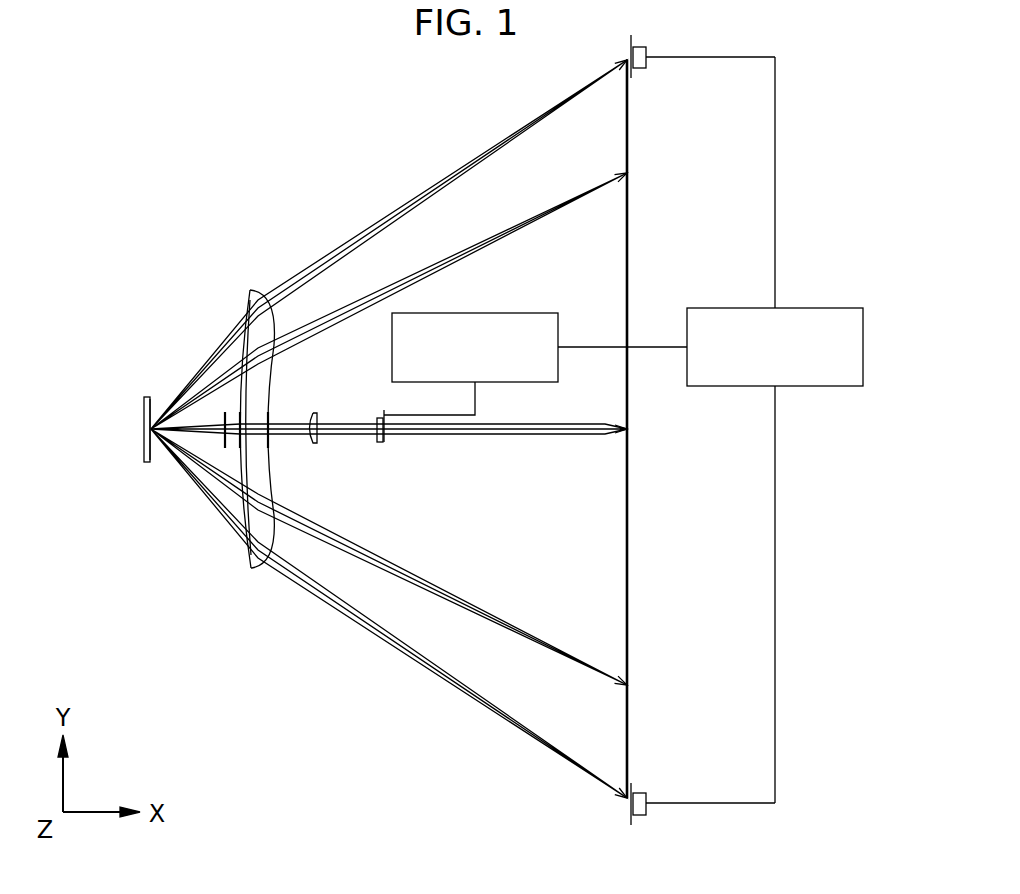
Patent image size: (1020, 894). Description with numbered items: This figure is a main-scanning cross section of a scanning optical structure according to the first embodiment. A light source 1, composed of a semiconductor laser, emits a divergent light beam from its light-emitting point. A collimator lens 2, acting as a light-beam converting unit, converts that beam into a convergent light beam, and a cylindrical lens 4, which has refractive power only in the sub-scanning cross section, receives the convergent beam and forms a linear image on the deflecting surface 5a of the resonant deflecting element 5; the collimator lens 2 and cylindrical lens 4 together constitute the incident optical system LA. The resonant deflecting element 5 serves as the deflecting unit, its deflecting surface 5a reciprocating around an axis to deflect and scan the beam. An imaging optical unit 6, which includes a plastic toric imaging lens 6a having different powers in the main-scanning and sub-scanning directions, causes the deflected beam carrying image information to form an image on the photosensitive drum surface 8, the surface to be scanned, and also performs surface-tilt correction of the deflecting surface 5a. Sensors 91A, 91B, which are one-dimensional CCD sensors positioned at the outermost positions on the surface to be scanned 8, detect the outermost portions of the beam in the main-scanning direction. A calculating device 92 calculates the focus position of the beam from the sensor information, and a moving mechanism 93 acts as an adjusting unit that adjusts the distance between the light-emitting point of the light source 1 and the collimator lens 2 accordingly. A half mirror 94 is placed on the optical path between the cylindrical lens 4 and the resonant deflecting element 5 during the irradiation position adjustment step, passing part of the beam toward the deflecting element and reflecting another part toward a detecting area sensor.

The light source 1 is at (381, 444).
The collimator lens 2 is at (311, 448).
The cylindrical lens 4 is at (270, 444).
The resonant deflecting element 5 is at (150, 463).
The deflecting surface 5a is at (151, 408).
The imaging optical unit 6 is at (238, 632).
The imaging lens 6a is at (253, 571).
The photosensitive drum surface 8 is at (627, 745).
The sensor 91A is at (640, 47).
The sensor 91B is at (640, 812).
The calculating device 92 is at (803, 308).
The moving mechanism 93 is at (503, 313).
The half mirror 94 is at (223, 438).
The incident optical system LA is at (297, 462).